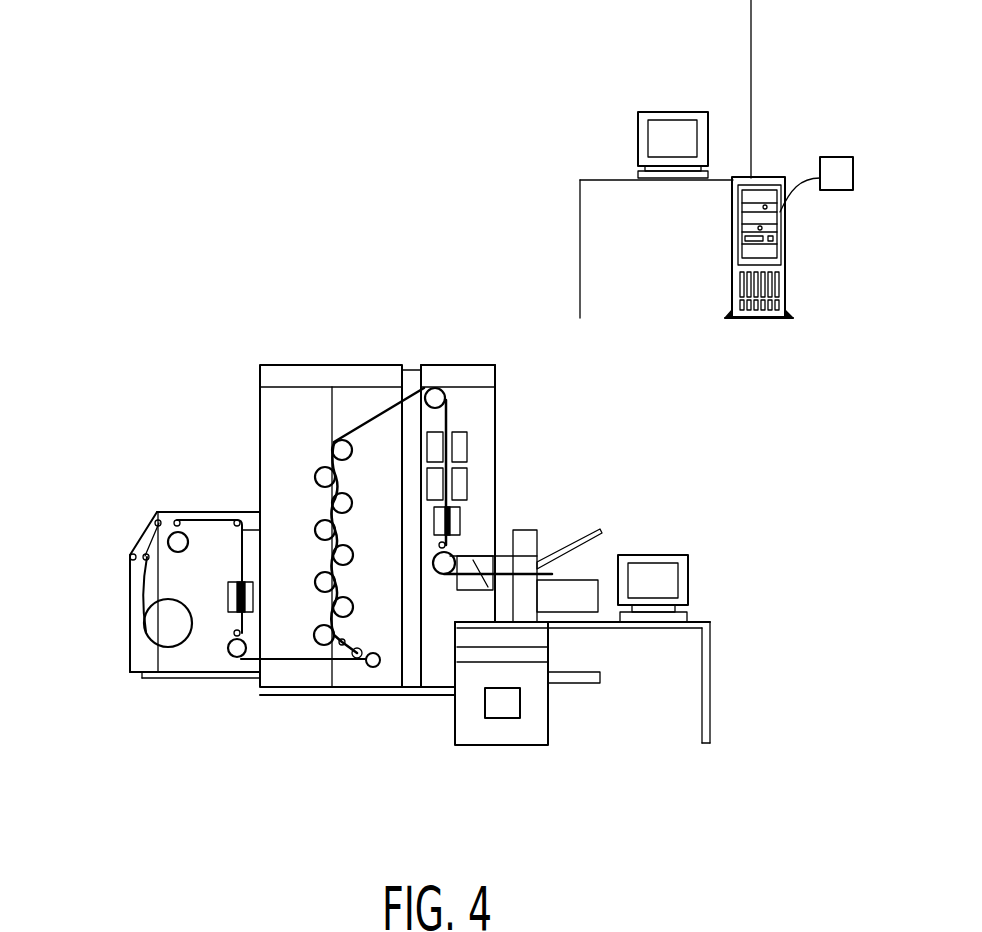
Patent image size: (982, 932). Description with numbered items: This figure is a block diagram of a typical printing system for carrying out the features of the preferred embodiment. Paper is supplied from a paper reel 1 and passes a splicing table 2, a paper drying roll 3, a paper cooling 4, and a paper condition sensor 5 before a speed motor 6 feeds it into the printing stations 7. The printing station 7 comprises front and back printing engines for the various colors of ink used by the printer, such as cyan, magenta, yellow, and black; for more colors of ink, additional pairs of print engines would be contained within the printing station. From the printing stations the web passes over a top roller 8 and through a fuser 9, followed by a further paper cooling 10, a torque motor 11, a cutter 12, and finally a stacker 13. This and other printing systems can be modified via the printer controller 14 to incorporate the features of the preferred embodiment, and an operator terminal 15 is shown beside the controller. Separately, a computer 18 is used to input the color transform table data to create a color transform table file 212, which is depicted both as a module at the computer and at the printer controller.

The paper reel 1 is at (168, 633).
The splicing table 2 is at (135, 530).
The paper drying roll 3 is at (170, 510).
The paper cooling 4 is at (235, 582).
The paper condition sensor 5 is at (228, 652).
The speed motor 6 is at (373, 668).
The printing stations 7 is at (302, 473).
The top roller 8 is at (436, 388).
The fuser 9 is at (467, 440).
The paper cooling 10 is at (457, 547).
The torque motor 11 is at (460, 517).
The cutter 12 is at (477, 557).
The stacker 13 is at (592, 558).
The printer controller 14 is at (475, 735).
The operator terminal 15 is at (665, 587).
The computer 18 is at (670, 110).
The color transform table file 212 is at (838, 155).